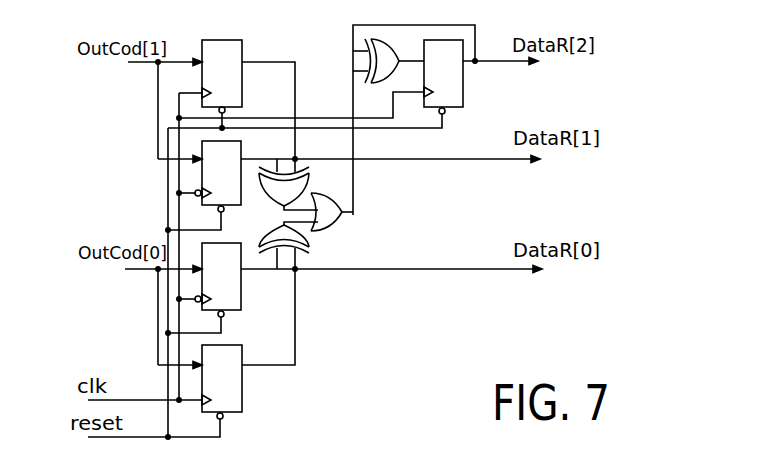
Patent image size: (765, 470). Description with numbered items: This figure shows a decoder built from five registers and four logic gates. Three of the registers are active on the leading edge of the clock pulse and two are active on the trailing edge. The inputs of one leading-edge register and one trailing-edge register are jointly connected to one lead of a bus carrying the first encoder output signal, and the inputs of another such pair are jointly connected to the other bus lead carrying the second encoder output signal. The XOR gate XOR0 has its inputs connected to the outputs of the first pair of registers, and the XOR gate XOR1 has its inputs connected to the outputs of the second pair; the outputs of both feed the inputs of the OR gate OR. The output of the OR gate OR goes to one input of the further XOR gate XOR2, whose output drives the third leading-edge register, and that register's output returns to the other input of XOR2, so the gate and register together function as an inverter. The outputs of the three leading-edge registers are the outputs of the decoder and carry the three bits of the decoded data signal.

The XOR gate XOR2 is at (412, 107).
The XOR gate XOR1 is at (307, 184).
The XOR gate XOR0 is at (319, 245).
The OR gate OR is at (350, 211).